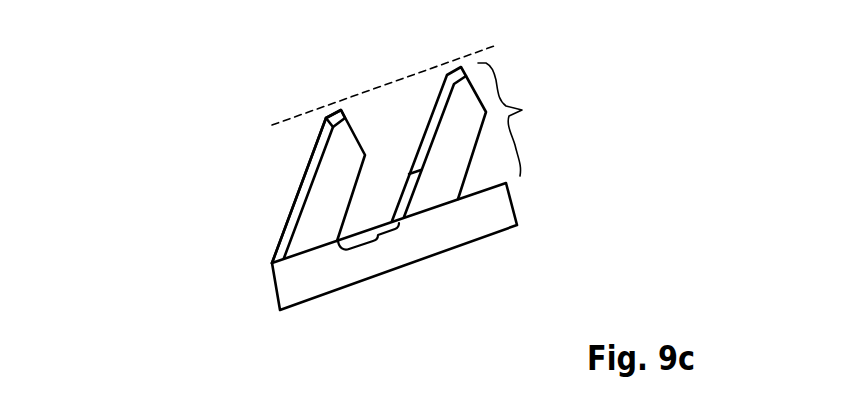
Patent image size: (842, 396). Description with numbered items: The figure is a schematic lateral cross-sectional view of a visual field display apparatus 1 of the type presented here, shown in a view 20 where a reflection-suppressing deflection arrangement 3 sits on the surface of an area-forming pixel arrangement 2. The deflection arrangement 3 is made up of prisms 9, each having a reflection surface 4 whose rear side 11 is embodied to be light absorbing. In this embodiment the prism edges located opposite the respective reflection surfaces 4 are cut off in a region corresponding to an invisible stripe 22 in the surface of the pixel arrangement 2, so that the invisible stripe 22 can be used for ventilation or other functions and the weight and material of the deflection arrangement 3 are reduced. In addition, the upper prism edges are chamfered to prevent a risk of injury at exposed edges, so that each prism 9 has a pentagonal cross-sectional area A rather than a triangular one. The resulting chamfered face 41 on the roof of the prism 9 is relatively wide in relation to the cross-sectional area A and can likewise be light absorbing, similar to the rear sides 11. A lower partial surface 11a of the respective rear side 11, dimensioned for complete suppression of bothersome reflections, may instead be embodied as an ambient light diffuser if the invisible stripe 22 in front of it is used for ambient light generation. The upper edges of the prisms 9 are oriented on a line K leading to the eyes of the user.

The contact arrangement 1 is at (619, 111).
The area-forming pixel arrangement 2 is at (394, 252).
The reflection-suppressing deflection arrangement 3 is at (510, 119).
The reflection surface 4 is at (311, 219).
The prism 9 is at (430, 185).
The rear side of the reflection surface 11 is at (368, 199).
The lower partial surface of the rear side 11a is at (396, 219).
The figure group marker 20 is at (49, 265).
The invisible stripe 22 is at (375, 247).
The chamfered face 41 is at (332, 115).
The line K is at (410, 76).
The cross-sectional area A is at (323, 199).